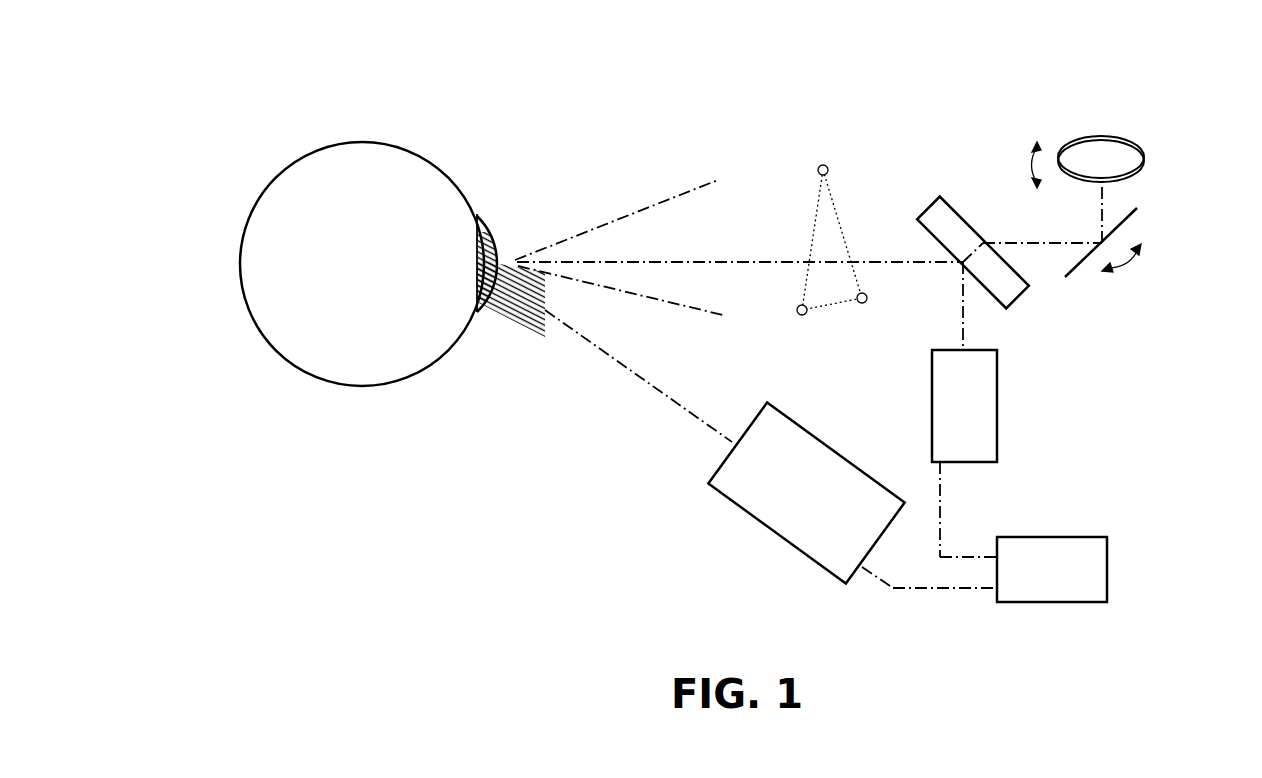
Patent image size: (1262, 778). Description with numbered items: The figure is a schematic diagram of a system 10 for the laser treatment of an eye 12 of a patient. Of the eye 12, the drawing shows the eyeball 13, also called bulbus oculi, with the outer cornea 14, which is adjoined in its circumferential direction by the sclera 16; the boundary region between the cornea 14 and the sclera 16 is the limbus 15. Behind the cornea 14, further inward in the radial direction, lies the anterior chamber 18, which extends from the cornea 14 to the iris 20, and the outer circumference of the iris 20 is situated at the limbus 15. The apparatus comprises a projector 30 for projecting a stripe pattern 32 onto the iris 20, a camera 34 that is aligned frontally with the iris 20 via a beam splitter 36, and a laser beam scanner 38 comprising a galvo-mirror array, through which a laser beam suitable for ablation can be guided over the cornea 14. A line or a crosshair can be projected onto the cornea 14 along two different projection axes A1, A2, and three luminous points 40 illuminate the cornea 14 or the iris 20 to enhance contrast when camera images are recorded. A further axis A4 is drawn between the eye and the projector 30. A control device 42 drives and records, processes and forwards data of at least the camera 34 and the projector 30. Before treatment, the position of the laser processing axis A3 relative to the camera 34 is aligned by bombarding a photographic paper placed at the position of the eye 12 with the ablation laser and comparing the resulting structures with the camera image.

The system 10 is at (627, 86).
The eye 12 is at (292, 149).
The eyeball 13 is at (325, 192).
The cornea 14 is at (483, 217).
The limbus 15 is at (477, 218).
The sclera 16 is at (377, 138).
The anterior chamber 18 is at (487, 230).
The iris 20 is at (478, 302).
The projector 30 is at (733, 503).
The stripe pattern 32 is at (530, 328).
The camera 34 is at (997, 402).
The beam splitter 36 is at (1015, 300).
The laser beam scanner 38 is at (1158, 137).
The luminous points 40 is at (833, 200).
The control device 42 is at (1107, 585).
The projection axis A1 is at (700, 307).
The projection axis A2 is at (670, 197).
The laser processing axis A3 is at (900, 262).
The imaging axis A4 is at (593, 345).